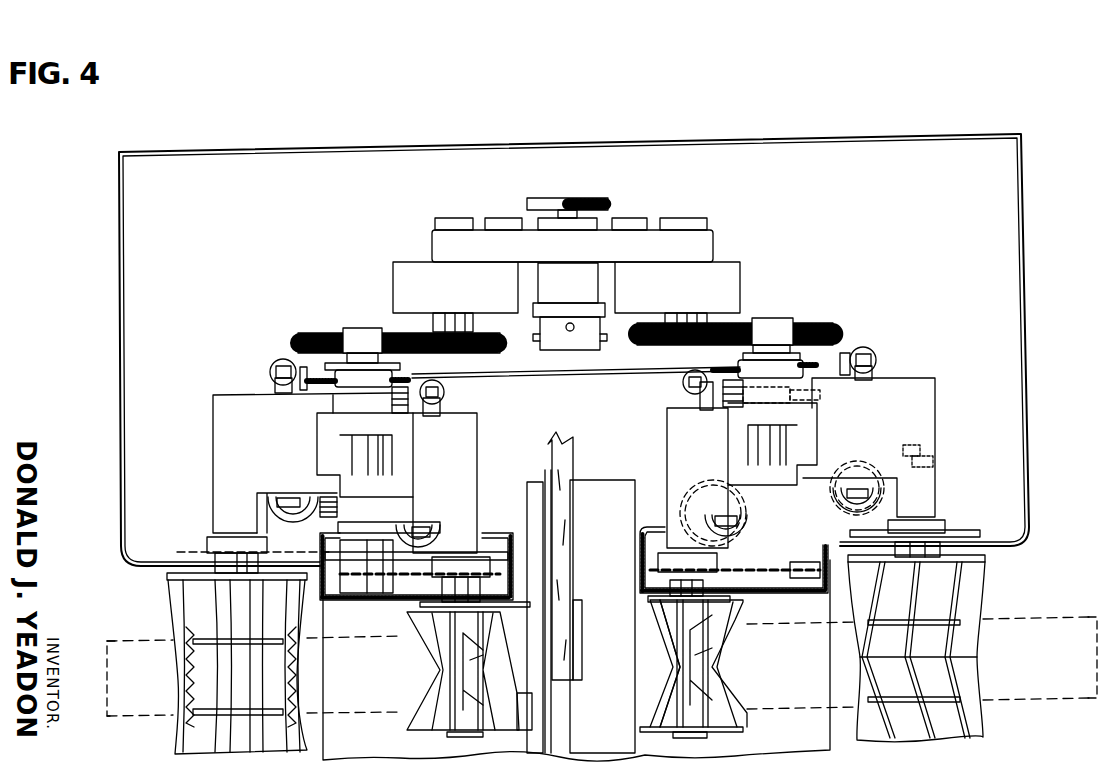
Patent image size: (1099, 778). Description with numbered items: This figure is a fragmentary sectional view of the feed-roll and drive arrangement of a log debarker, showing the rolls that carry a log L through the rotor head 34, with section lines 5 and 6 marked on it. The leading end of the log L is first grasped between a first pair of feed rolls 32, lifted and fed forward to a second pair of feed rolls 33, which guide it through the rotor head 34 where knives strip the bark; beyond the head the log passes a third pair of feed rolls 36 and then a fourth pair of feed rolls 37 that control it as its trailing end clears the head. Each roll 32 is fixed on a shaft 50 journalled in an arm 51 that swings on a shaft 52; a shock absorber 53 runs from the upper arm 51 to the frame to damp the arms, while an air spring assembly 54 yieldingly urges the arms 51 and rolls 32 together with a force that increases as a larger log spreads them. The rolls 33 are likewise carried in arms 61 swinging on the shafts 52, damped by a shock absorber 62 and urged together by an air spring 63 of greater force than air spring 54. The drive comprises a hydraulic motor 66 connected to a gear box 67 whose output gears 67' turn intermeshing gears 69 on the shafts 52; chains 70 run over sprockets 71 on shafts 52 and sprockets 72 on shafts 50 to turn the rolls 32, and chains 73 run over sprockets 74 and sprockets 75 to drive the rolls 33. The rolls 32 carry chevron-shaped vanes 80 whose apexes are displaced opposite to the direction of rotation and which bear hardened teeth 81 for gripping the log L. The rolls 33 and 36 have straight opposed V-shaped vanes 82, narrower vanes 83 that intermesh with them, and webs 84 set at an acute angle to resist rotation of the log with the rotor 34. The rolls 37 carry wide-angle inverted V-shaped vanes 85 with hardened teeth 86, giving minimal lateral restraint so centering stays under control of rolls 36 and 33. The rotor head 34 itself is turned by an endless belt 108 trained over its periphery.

The section line 5- 5 is at (710, 353).
The section line 6- 6 is at (573, 186).
The first pair of feed rolls 32 is at (942, 648).
The second pair of feed rolls 33 is at (744, 720).
The rotor head 34 is at (595, 487).
The third pair of feed rolls 36 is at (410, 737).
The fourth pair of feed rolls 37 is at (214, 664).
The shaft 50 is at (940, 518).
The arm 51 is at (213, 455).
The shaft 52 is at (357, 453).
The shock absorber 53 is at (278, 360).
The air spring assembly 54 is at (276, 494).
The arm 61 is at (457, 448).
The shock absorber 62 is at (447, 395).
The air spring 63 is at (443, 547).
The hydraulic motor 66 is at (547, 274).
The gear box 67 is at (594, 230).
The output gears 67' is at (566, 297).
The gear 69 is at (313, 333).
The chain 70 is at (862, 520).
The sprocket 71 is at (793, 547).
The sprocket 72 is at (946, 534).
The chain 73 is at (740, 574).
The sprocket 74 is at (803, 579).
The sprocket 75 is at (648, 577).
The vanes 80 is at (978, 606).
The teeth 81 is at (982, 628).
The V-shaped vanes 82 is at (714, 663).
The narrower V-shaped vanes 83 is at (690, 650).
The webs 84 is at (707, 630).
The inverted V-shaped vanes 85 is at (178, 608).
The teeth 86 is at (180, 698).
The endless belt 108 is at (568, 437).
The log L is at (602, 650).